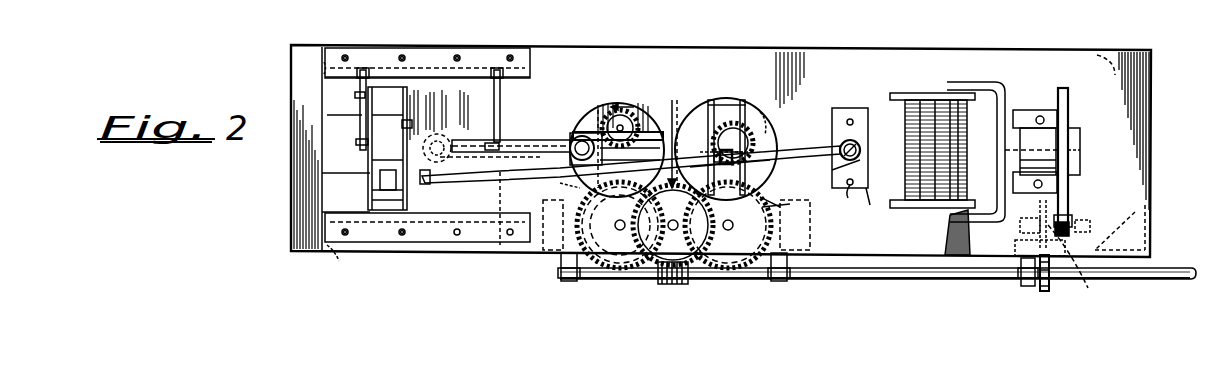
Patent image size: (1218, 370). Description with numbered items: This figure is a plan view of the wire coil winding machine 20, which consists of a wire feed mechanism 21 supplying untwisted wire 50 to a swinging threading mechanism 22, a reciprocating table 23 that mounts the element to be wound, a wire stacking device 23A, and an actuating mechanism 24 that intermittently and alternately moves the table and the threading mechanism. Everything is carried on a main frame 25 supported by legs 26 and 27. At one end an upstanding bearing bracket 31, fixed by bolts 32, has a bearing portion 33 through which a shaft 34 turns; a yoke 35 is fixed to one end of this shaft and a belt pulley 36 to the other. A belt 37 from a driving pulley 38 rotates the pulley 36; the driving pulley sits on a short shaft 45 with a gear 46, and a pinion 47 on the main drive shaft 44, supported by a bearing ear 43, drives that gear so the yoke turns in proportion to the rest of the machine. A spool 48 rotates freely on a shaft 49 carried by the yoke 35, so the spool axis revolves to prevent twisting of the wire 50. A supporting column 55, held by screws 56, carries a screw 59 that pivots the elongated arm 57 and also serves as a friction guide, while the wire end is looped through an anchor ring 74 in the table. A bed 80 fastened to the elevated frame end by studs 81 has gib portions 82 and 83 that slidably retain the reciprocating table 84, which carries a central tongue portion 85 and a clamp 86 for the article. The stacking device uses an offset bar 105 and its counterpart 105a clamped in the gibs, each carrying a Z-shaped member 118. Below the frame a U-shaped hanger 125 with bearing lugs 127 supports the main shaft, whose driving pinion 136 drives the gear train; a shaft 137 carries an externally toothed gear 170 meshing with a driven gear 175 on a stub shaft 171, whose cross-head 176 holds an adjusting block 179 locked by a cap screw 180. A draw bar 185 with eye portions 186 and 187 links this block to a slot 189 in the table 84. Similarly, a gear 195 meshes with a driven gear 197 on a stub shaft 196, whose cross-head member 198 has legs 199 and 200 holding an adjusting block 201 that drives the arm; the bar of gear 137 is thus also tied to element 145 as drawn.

The wire coil winding machine 20 is at (864, 85).
The wire feed mechanism 21 is at (1004, 83).
The threading mechanism 22 is at (526, 181).
The reciprocating table 23 is at (320, 163).
The wire stacking device 23A is at (358, 138).
The actuating mechanism 24 is at (660, 281).
The main frame 25 is at (1130, 186).
The legs 26 is at (1114, 152).
The legs 27 is at (323, 167).
The bearing bracket 31 is at (1036, 103).
The bolts 32 is at (1036, 191).
The bearing portion 33 is at (1061, 90).
The shaft 34 is at (990, 156).
The yoke 35 is at (946, 232).
The belt pulley 36 is at (1076, 128).
The belt 37 is at (1068, 203).
The driving pulley 38 is at (1064, 237).
The bearing ear 43 is at (1026, 289).
The main drive shaft 44 is at (890, 283).
The short shaft 45 is at (1088, 293).
The gear 46 is at (1015, 247).
The pinion 47 is at (1046, 283).
The spool 48 is at (905, 92).
The shaft 49 is at (930, 217).
The wire 50 is at (866, 162).
The supporting column 55 is at (868, 121).
The screws 56 is at (850, 188).
The elongated arm 57 is at (806, 157).
The screw 59 is at (868, 190).
The anchor ring 74 is at (437, 184).
The bed 80 is at (338, 196).
The studs or screws 81 is at (511, 56).
The gib portion 82 is at (480, 238).
The gib portion 83 is at (382, 56).
The reciprocating table 84 is at (330, 115).
The tongue portion 85 is at (336, 116).
The clamp 86 is at (404, 129).
The offset bar 105 is at (500, 92).
The offset bar 105a is at (347, 93).
The Z-shaped member 118 is at (525, 175).
The U-shaped hanger 125 is at (812, 240).
The bearing lugs 127 is at (574, 283).
The driving pinion 136 is at (684, 285).
The shaft 137 is at (620, 225).
The shaft 145 is at (691, 145).
The externally toothed gear 170 is at (582, 191).
The stub shaft 171 is at (593, 149).
The driven gear 175 is at (626, 125).
The cross-head 176 is at (592, 106).
The adjusting block 179 is at (672, 125).
The cap screw 180 is at (640, 112).
The draw bar 185 is at (528, 133).
The eye portion 186 is at (452, 140).
The eye portion 187 is at (566, 140).
The slot 189 is at (448, 160).
The externally toothed gear 195 is at (771, 202).
The stub shaft 196 is at (733, 143).
The driven gear 197 is at (766, 117).
The cross-head member 198 is at (768, 112).
The leg 199 is at (718, 104).
The leg 200 is at (748, 108).
The adjusting block 201 is at (728, 102).